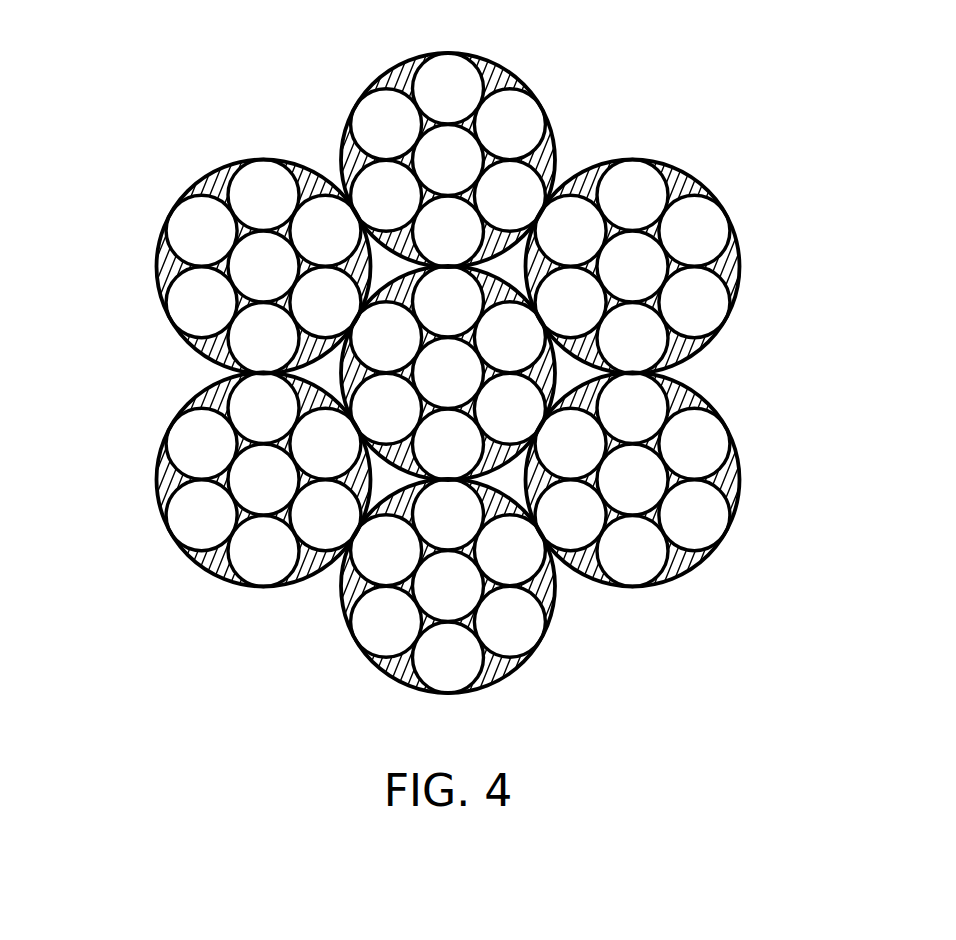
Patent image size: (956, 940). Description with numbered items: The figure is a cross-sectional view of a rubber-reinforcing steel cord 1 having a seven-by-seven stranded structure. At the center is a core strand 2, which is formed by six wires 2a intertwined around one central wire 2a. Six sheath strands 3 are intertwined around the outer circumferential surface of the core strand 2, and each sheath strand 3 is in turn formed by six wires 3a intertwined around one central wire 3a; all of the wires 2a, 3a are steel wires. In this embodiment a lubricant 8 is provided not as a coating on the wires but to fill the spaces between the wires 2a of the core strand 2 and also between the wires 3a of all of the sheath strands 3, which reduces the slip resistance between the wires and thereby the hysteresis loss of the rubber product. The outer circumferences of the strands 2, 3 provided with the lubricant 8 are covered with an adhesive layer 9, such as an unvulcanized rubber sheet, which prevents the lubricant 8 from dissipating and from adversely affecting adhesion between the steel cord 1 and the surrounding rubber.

The steel cord 1 is at (596, 143).
The core strand 2 is at (512, 285).
The wire 2a is at (422, 360).
The sheath strand 3 is at (207, 168).
The wire 3a is at (245, 262).
The lubricant 8 is at (428, 322).
The adhesive layer 9 is at (340, 165).